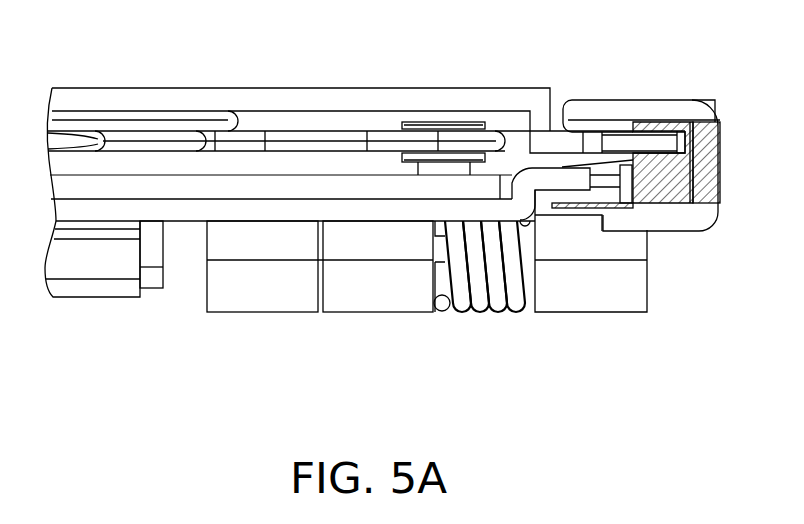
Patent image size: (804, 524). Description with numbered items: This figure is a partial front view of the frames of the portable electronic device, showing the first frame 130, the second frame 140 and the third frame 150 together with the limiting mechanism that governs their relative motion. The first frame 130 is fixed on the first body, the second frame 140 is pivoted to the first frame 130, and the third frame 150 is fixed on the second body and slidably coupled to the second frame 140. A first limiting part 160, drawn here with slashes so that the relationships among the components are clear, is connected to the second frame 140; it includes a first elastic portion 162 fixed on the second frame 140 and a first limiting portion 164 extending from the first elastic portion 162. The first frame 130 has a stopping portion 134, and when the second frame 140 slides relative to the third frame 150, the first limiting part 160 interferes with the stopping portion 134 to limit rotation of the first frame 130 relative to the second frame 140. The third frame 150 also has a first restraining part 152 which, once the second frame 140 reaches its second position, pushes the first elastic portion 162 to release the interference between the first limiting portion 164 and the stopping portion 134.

The third frame 150 is at (293, 100).
The first restraining part 152 is at (621, 147).
The second frame 140 is at (671, 112).
The first frame 130 is at (267, 208).
The stopping portion 134 is at (550, 180).
The first limiting part 160 is at (645, 280).
The first limiting portion 164 is at (628, 205).
The first elastic portion 162 is at (707, 160).